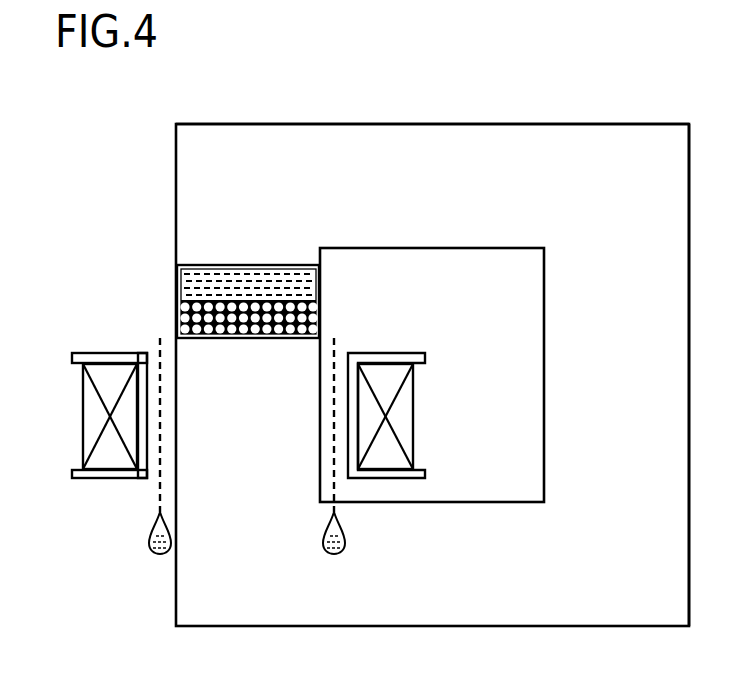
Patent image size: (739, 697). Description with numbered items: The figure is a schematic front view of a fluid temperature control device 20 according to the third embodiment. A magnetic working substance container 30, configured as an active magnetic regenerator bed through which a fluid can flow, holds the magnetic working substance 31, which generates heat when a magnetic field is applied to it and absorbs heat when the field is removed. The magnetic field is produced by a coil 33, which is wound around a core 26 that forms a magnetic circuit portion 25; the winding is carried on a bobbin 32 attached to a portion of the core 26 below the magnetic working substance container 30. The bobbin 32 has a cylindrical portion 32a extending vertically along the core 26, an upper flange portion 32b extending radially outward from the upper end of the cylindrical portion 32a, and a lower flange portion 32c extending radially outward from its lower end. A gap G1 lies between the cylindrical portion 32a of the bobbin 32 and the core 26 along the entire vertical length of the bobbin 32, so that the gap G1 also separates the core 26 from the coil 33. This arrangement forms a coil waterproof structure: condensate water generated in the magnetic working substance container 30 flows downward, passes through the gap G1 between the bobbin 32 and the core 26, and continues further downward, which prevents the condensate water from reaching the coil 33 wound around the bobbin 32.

The fluid temperature control device 20 is at (293, 100).
The magnetic circuit portion 25 is at (525, 122).
The core 26 is at (625, 123).
The magnetic working substance container 30 is at (244, 277).
The magnetic working substance 31 is at (297, 307).
The bobbin 32 is at (415, 352).
The cylindrical portion 32a is at (148, 448).
The upper flange portion 32b is at (106, 353).
The lower flange portion 32c is at (105, 479).
The coil 33 is at (415, 413).
The gap G1 is at (155, 363).